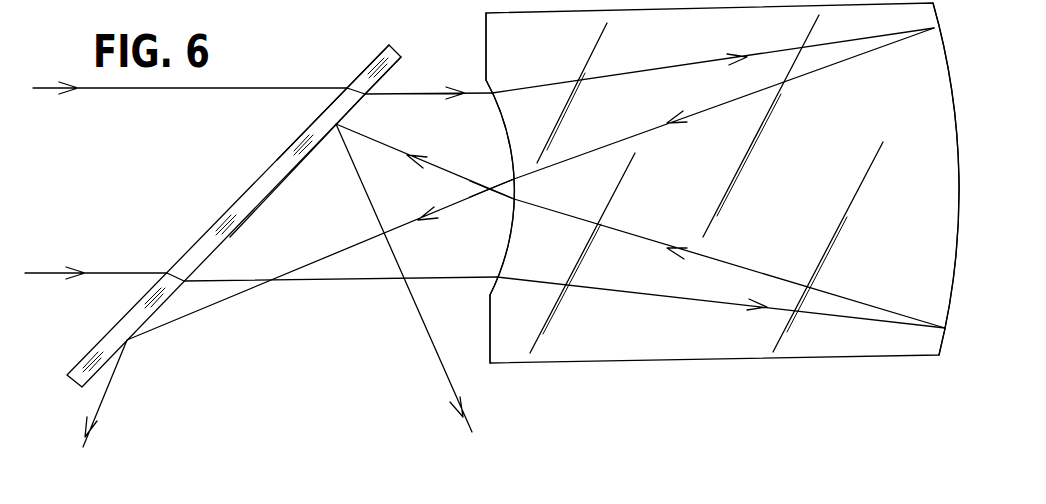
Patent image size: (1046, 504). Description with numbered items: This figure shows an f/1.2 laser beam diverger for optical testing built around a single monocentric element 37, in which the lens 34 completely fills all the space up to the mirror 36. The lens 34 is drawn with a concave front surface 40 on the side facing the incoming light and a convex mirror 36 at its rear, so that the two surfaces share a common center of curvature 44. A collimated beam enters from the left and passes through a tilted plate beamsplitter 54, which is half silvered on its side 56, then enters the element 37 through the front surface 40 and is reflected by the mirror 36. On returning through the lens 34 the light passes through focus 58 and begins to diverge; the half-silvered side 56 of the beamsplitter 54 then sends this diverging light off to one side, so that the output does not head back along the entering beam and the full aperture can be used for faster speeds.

The lens 34 is at (772, 224).
The mirror 36 is at (950, 92).
The single monocentric element 37 is at (483, 323).
The front surface 40 is at (512, 233).
The center of curvature 44 is at (269, 183).
The beamsplitter 54 is at (280, 160).
The half-silvered side 56 is at (230, 237).
The focus 58 is at (489, 189).